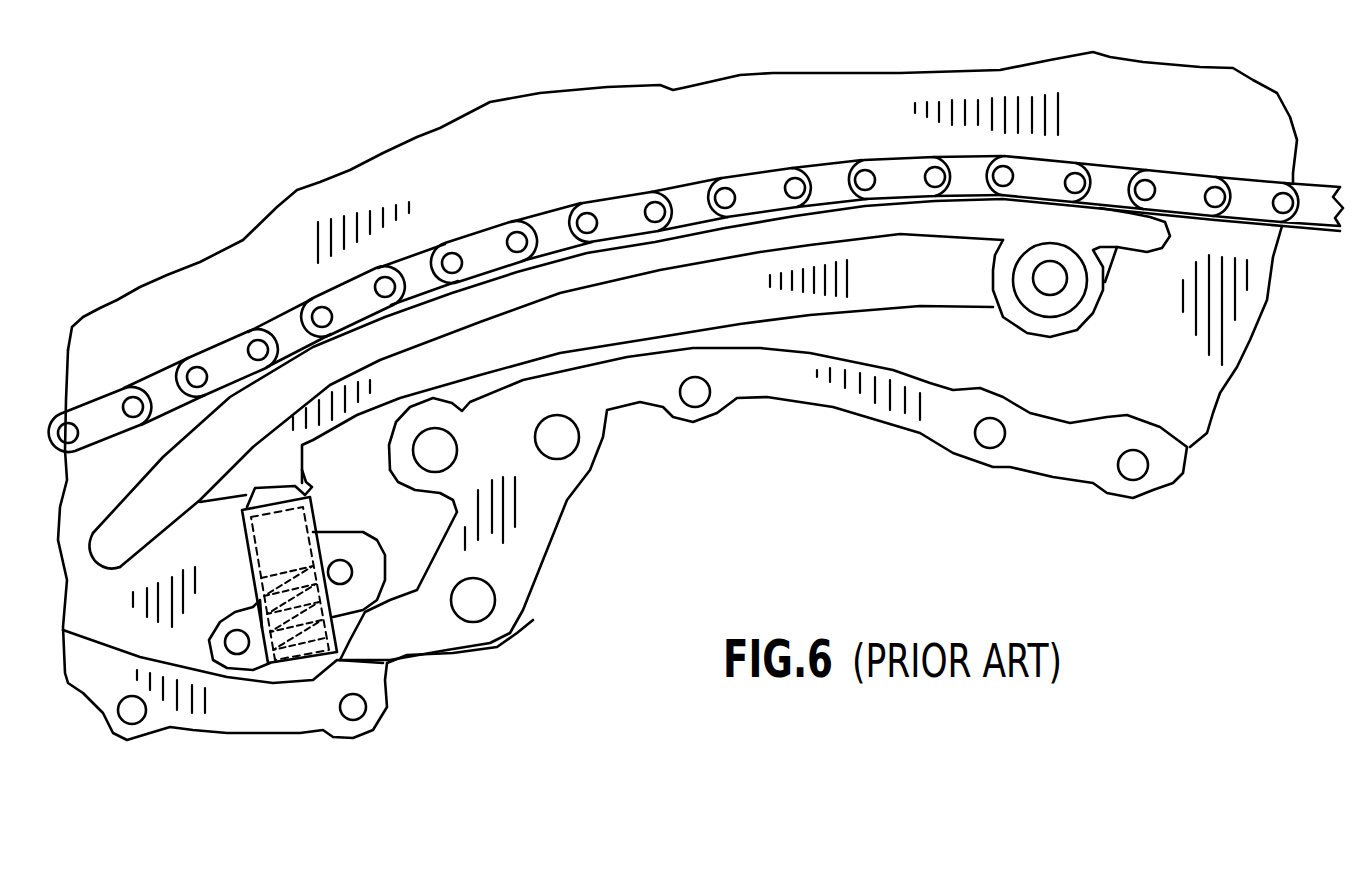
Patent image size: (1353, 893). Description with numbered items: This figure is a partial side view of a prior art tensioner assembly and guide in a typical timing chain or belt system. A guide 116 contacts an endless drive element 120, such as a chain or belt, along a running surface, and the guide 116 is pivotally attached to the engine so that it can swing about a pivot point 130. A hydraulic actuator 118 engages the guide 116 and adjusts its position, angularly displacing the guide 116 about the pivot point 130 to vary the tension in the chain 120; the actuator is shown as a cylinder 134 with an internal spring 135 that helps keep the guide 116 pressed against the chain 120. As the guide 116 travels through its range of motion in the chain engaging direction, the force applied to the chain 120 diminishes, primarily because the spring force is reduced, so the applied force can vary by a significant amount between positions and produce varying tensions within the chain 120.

The guide 116 is at (493, 290).
The hydraulic actuator 118 is at (385, 663).
The endless drive element 120 is at (1185, 180).
The pivot point 130 is at (1050, 278).
The hydraulic tensioner cylinder 134 is at (308, 500).
The spring 135 is at (293, 648).